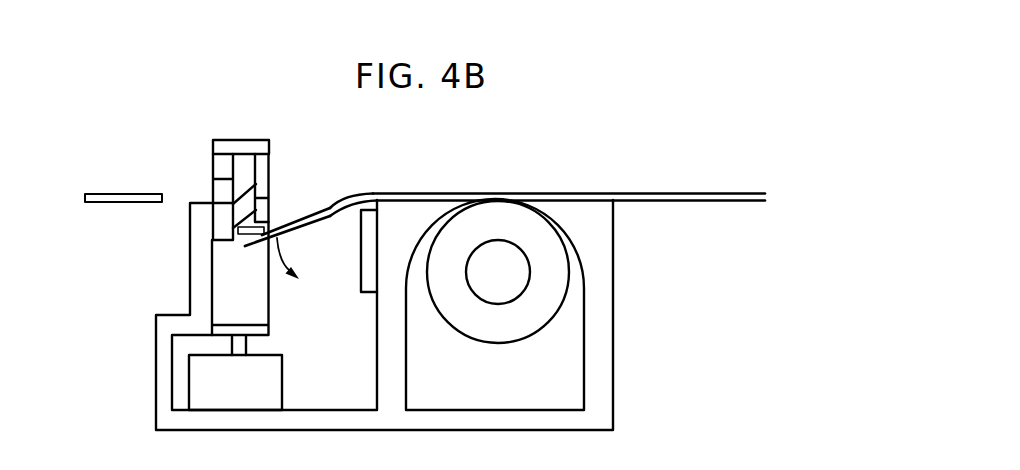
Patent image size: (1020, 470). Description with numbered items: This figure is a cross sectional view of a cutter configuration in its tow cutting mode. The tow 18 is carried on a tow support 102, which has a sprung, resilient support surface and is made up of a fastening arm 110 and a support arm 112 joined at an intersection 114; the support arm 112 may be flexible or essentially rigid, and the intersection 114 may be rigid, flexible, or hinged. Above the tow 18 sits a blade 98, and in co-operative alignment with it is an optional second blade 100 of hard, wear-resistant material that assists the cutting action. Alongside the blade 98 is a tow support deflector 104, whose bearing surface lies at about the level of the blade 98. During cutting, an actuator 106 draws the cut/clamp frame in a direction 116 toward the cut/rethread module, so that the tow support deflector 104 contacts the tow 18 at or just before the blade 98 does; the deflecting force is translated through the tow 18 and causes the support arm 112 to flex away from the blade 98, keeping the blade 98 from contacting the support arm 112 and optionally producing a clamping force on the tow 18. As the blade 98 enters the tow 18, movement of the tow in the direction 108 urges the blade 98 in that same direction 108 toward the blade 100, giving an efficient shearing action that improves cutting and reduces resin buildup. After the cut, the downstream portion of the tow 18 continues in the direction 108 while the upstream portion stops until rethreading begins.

The tow 18 is at (662, 192).
The blade 98 is at (213, 179).
The blade 100 is at (233, 210).
The tow support 102 is at (320, 221).
The tow support deflector 104 is at (269, 197).
The actuator 106 is at (283, 377).
The direction 108 is at (110, 178).
The fastening arm 110 is at (362, 284).
The support arm 112 is at (305, 213).
The intersection 114 is at (373, 198).
The direction 116 is at (303, 256).